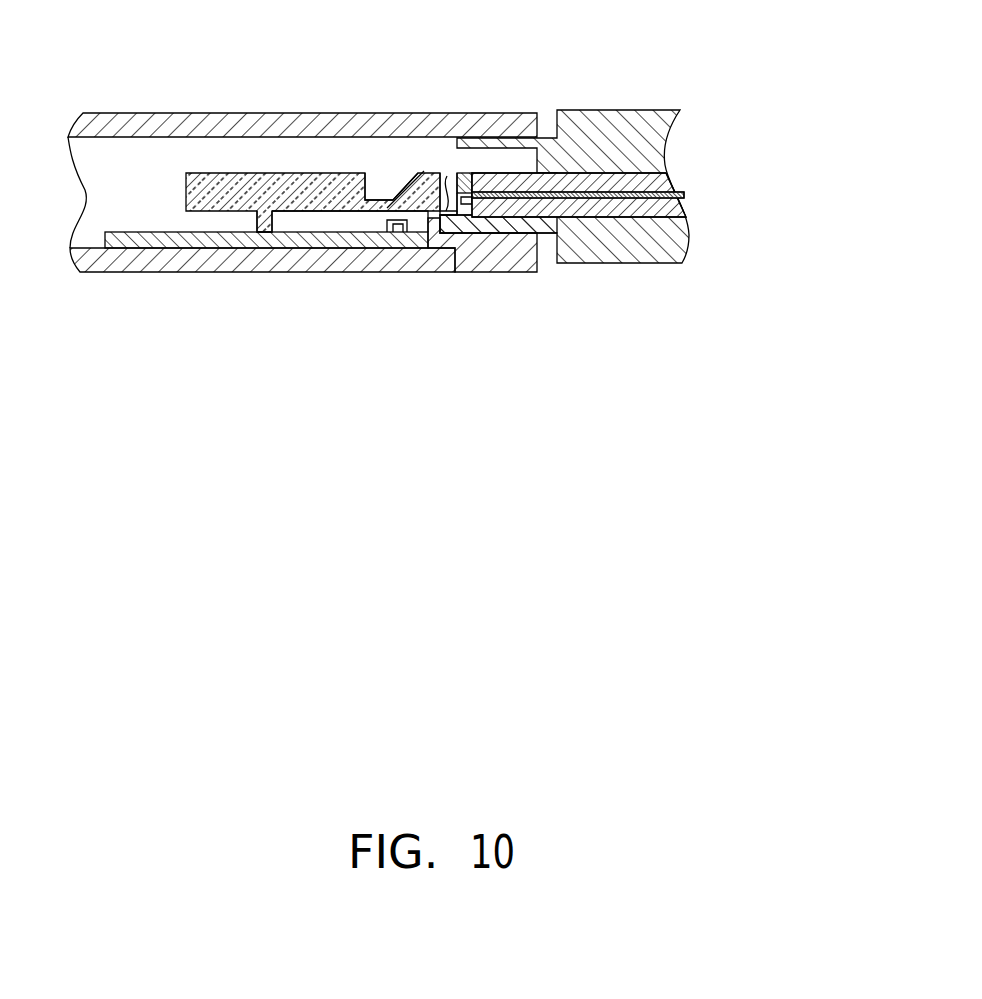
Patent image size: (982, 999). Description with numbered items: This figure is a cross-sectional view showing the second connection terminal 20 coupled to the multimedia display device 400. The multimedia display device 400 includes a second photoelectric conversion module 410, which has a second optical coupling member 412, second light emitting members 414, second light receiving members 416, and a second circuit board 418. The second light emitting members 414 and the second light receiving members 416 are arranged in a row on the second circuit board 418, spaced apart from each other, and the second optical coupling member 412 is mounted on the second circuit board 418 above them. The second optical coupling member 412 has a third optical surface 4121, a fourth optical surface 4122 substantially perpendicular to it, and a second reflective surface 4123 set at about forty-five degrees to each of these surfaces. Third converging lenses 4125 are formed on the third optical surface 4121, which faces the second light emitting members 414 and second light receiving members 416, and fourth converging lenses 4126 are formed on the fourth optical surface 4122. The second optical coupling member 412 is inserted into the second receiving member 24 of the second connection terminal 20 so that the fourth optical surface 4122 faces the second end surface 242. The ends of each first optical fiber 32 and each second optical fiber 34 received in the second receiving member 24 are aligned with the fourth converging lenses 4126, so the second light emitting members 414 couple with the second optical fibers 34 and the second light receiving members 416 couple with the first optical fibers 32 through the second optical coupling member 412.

The multimedia display device 400 is at (138, 76).
The second photoelectric conversion module 410 is at (172, 204).
The second optical coupling member 412 is at (262, 182).
The third optical surface 4121 is at (293, 211).
The fourth optical surface 4122 is at (441, 173).
The second reflective surface 4123 is at (392, 186).
The third converging lenses 4125 is at (340, 232).
The fourth converging lenses 4126 is at (458, 200).
The second light emitting members 414 is at (431, 242).
The second light receiving members 416 is at (391, 240).
The second circuit board 418 is at (175, 232).
The second connection terminal 20 is at (608, 112).
The second receiving member 24 is at (675, 183).
The second end surface 242 is at (472, 230).
The first optical fiber 32 is at (678, 202).
The second optical fiber 34 is at (578, 195).